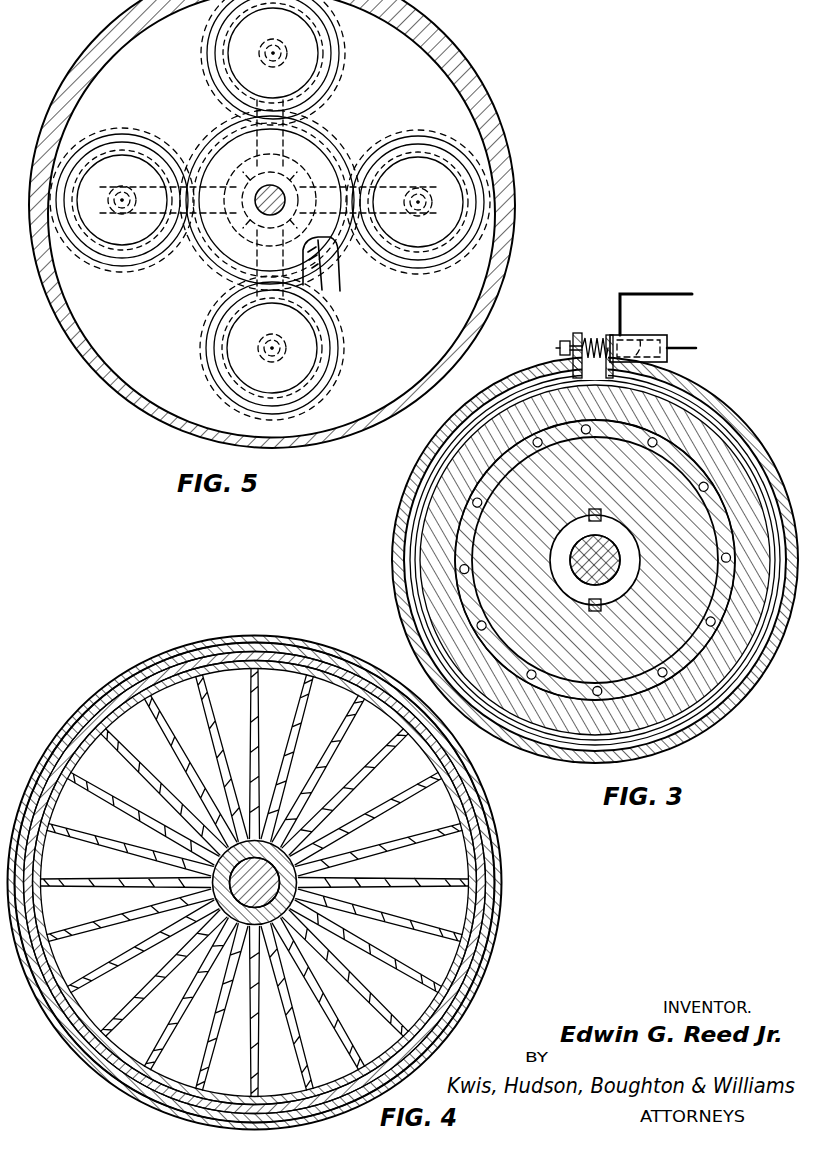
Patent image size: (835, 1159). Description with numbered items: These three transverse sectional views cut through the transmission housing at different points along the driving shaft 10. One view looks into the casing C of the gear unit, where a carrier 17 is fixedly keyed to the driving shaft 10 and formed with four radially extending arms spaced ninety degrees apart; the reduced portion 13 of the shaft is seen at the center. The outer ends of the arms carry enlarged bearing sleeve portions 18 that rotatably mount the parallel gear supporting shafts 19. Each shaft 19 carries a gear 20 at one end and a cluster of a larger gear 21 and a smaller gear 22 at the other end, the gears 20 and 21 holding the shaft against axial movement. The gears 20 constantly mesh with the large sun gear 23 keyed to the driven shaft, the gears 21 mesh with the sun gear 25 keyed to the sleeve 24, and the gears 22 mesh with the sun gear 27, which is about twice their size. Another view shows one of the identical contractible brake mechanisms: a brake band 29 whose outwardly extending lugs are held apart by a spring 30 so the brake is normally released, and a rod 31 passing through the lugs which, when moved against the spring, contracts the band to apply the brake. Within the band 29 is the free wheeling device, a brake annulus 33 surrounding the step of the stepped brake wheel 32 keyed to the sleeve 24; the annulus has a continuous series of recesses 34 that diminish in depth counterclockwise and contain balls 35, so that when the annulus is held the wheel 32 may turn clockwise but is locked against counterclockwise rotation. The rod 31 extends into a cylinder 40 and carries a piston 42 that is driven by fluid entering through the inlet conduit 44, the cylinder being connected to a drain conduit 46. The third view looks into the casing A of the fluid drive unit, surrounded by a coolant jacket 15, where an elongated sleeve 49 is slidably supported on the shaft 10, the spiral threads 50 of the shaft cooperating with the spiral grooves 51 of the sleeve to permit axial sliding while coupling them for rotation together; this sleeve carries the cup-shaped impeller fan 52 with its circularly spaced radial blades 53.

In FIG. 5, the driving shaft 10 is at (255, 182).
In FIG. 3, the driving shaft 10 is at (620, 546).
In FIG. 4, the driving shaft 10 is at (300, 870).
In FIG. 5, the centrally reduced portion 13 is at (262, 214).
In FIG. 4, the coolant jacket 15 is at (195, 656).
In FIG. 5, the carrier 17 is at (298, 180).
In FIG. 5, the bearing sleeve portions 18 is at (262, 354).
In FIG. 5, the gear supporting shafts 19 is at (418, 190).
In FIG. 5, the gears 20 is at (218, 53).
In FIG. 5, the larger gear 21 is at (322, 77).
In FIG. 5, the smaller gear 22 is at (333, 53).
In FIG. 5, the large sun gear 23 is at (323, 136).
In FIG. 3, the elongated sleeve 24 is at (624, 565).
In FIG. 5, the sun gear 25 is at (336, 266).
In FIG. 5, the sun gear 27 is at (200, 125).
In FIG. 3, the brake band 29 is at (706, 412).
In FIG. 3, the spring 30 is at (600, 336).
In FIG. 3, the rod 31 is at (560, 346).
In FIG. 3, the stepped brake wheel 32 is at (490, 531).
In FIG. 3, the brake annulus 33 is at (706, 690).
In FIG. 3, the recesses 34 is at (505, 456).
In FIG. 3, the balls 35 is at (588, 434).
In FIG. 3, the cylinder 40 is at (640, 336).
In FIG. 3, the piston 42 is at (666, 340).
In FIG. 3, the inlet conduit 44 is at (680, 292).
In FIG. 3, the drain conduit 46 is at (697, 349).
In FIG. 4, the elongated sleeve 49 is at (214, 866).
In FIG. 4, the spiral threads 50 is at (300, 884).
In FIG. 4, the spiral grooves 51 is at (212, 892).
In FIG. 4, the impeller fan 52 is at (120, 708).
In FIG. 4, the blades 53 is at (256, 730).
In FIG. 4, the casing A is at (285, 640).
In FIG. 5, the casing C is at (515, 185).